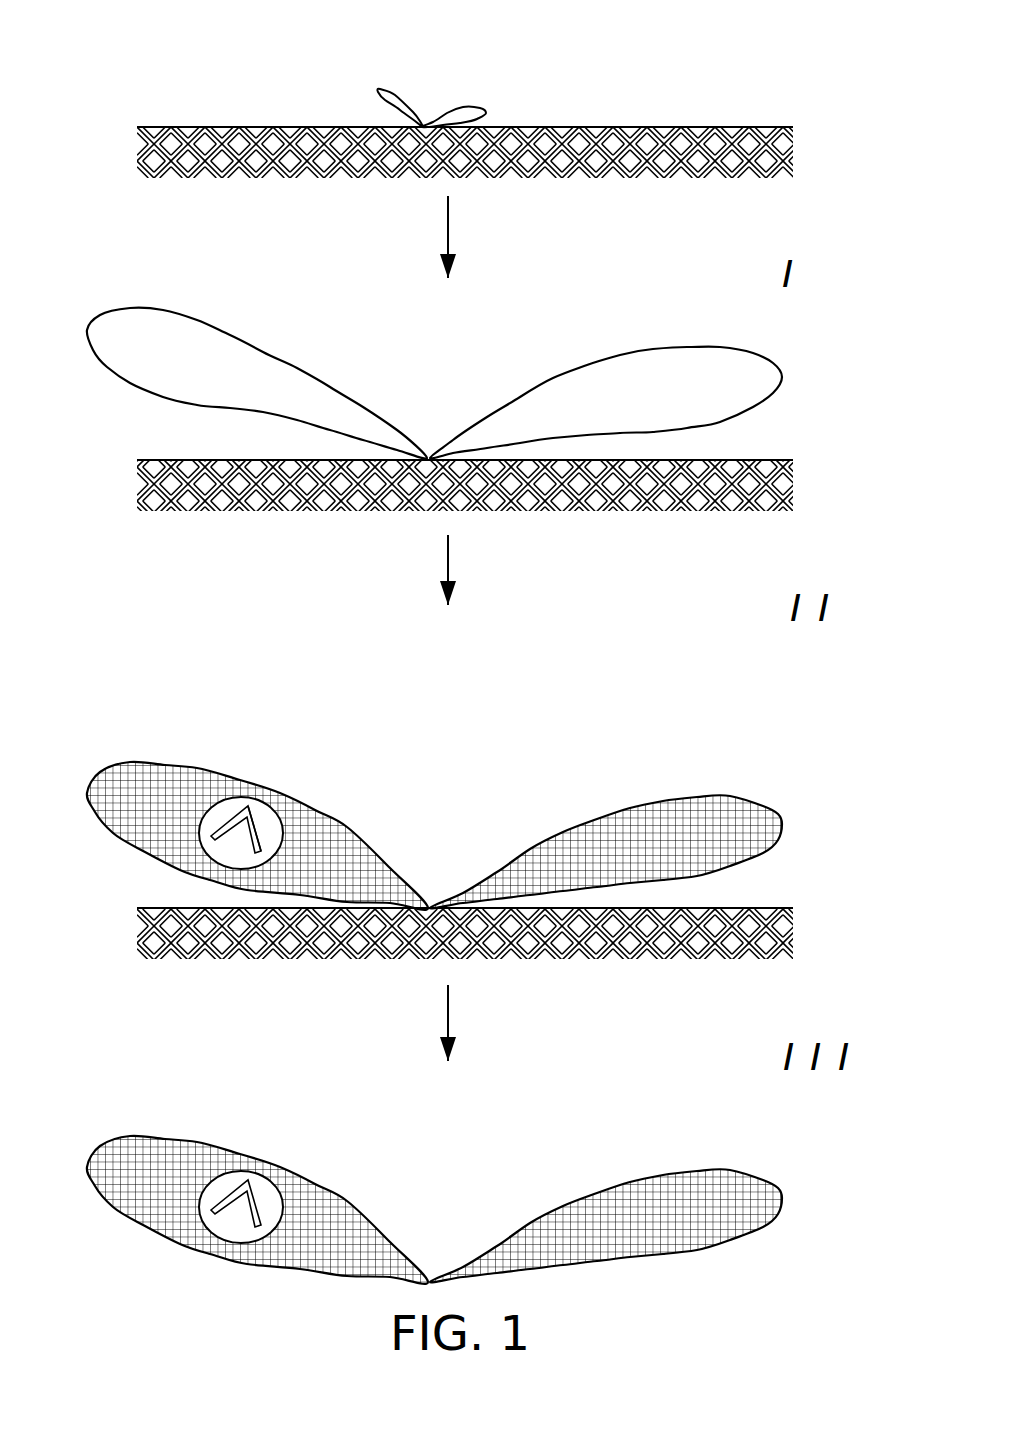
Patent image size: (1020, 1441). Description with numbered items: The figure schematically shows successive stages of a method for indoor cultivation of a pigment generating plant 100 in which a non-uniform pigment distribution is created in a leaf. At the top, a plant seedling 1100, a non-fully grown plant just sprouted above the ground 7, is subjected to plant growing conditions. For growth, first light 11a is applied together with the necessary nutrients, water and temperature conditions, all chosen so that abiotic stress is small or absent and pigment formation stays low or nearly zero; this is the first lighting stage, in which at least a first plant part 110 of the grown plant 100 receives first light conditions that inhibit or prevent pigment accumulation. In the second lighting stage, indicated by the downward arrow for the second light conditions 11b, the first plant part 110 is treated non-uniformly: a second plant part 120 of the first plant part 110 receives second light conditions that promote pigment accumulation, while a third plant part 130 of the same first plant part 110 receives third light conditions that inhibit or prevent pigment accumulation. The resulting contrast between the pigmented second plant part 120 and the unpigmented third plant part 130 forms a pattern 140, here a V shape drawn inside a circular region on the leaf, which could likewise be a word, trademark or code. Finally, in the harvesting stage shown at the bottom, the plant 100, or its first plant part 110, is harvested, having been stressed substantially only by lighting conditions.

The ground 7 is at (640, 114).
The plant seedling 1100 is at (461, 93).
The pigment generating plant 100 is at (288, 300).
The first plant part 110 is at (320, 798).
The second plant part 120 is at (257, 835).
The third plant part 130 is at (242, 858).
The pattern 140 is at (237, 806).
The first light 11a is at (504, 237).
The second light conditions 11b is at (484, 570).